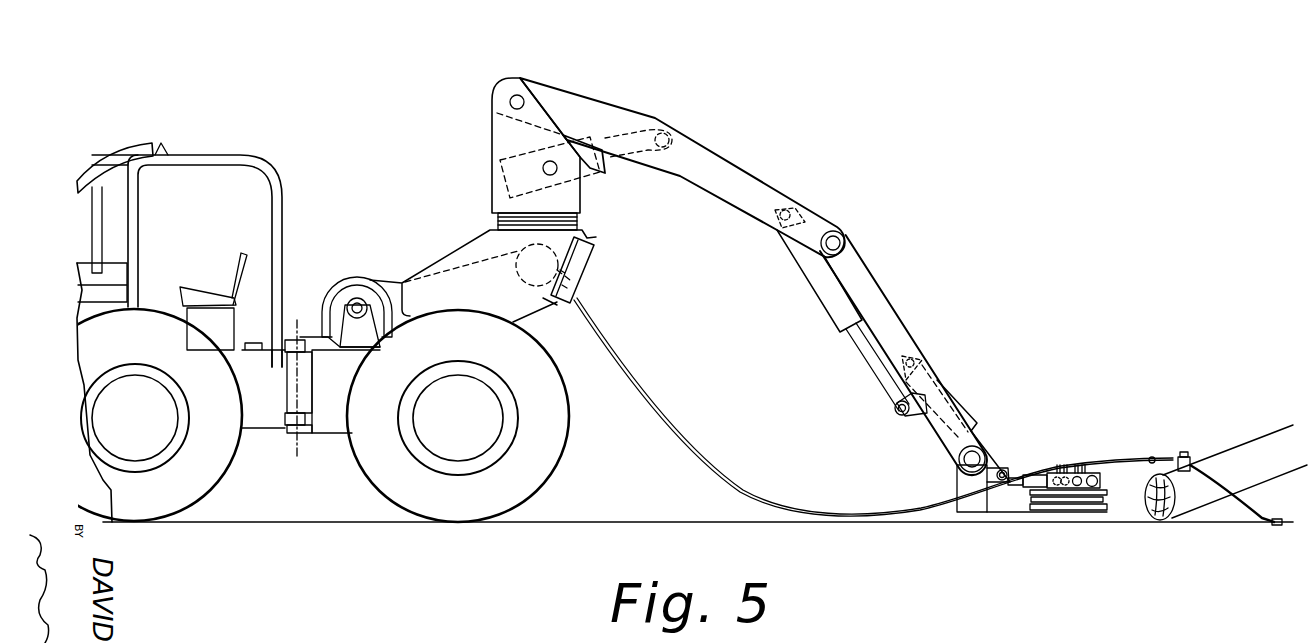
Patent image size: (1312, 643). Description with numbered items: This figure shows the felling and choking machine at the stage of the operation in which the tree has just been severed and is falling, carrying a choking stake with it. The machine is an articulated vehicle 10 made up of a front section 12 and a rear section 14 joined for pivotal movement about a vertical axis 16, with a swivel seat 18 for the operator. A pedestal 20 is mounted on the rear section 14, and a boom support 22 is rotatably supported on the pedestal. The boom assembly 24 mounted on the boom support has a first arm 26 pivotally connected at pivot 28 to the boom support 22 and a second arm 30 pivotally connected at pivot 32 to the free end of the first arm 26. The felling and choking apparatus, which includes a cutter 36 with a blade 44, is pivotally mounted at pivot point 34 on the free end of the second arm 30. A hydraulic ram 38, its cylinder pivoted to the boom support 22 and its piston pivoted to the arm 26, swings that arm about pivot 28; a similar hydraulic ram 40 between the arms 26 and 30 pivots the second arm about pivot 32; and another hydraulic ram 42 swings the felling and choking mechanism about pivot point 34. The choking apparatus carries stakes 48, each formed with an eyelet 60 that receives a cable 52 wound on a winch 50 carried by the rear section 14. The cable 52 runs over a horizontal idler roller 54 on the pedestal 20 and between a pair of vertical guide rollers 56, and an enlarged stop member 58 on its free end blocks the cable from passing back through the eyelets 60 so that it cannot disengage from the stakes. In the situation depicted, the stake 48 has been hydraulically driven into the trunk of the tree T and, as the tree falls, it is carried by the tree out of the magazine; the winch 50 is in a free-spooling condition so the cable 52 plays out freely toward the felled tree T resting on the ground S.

The articulated vehicle 10 is at (293, 214).
The front section 12 is at (257, 410).
The rear section 14 is at (330, 410).
The vertical axis 16 is at (295, 442).
The swivel seat 18 is at (196, 292).
The pedestal 20 is at (487, 245).
The boom support 22 is at (508, 143).
The boom assembly 24 is at (682, 153).
The arm 26 is at (610, 117).
The pivot connection 28 is at (512, 100).
The arm 30 is at (888, 320).
The pivot connection 32 is at (838, 245).
The pivot point 34 is at (958, 460).
The cutter 36 is at (995, 500).
The hydraulic ram 38 is at (592, 174).
The hydraulic ram 40 is at (828, 293).
The hydraulic ram 42 is at (967, 410).
The blade 44 is at (1062, 495).
The stake 48 is at (1155, 459).
The winch 50 is at (357, 287).
The cable 52 is at (628, 372).
The horizontal idler roller 54 is at (515, 278).
The vertical guide rollers 56 is at (584, 260).
The stop member 58 is at (1277, 528).
The eyelet 60 is at (1170, 457).
The skid plates S is at (1073, 515).
The tree log T is at (1200, 495).